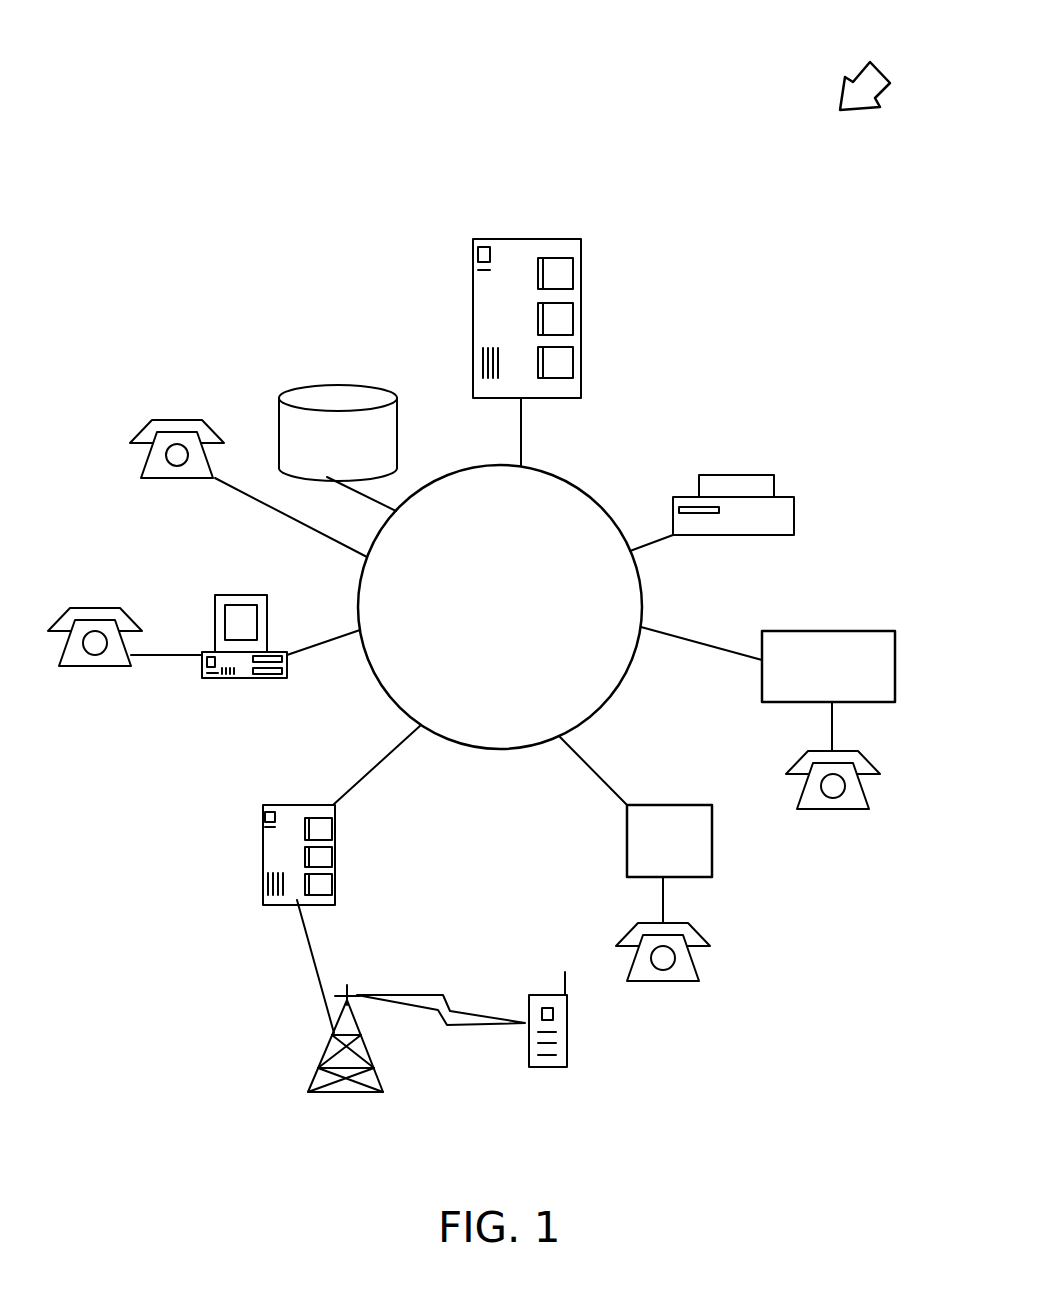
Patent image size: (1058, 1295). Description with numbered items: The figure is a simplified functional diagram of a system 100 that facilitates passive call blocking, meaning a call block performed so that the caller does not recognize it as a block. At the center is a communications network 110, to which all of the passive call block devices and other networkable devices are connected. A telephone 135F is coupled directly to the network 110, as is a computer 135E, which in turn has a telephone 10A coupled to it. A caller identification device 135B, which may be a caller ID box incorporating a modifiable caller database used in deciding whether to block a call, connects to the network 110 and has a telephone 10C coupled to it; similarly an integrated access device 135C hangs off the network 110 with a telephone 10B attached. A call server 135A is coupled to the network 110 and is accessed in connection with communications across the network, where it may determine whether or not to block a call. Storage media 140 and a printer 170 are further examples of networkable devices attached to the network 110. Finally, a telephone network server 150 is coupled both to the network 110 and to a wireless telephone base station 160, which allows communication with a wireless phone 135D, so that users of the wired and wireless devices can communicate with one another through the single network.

The system 100 is at (893, 60).
The communications network 110 is at (500, 607).
The call server 135A is at (558, 232).
The storage media 140 is at (337, 393).
The telephone 135F is at (168, 480).
The printer 170 is at (723, 465).
The caller identification device 135B is at (897, 667).
The telephone 10C is at (833, 809).
The integrated access device 135C is at (613, 840).
The telephone 10B is at (673, 981).
The telephone 10A is at (105, 608).
The computer 135E is at (247, 690).
The telephone network server 150 is at (345, 863).
The wireless telephone base station 160 is at (343, 972).
The wireless phone 135D is at (540, 1080).